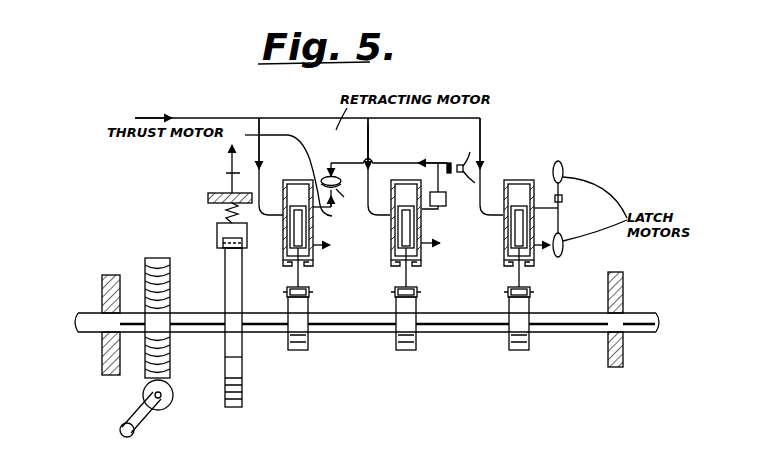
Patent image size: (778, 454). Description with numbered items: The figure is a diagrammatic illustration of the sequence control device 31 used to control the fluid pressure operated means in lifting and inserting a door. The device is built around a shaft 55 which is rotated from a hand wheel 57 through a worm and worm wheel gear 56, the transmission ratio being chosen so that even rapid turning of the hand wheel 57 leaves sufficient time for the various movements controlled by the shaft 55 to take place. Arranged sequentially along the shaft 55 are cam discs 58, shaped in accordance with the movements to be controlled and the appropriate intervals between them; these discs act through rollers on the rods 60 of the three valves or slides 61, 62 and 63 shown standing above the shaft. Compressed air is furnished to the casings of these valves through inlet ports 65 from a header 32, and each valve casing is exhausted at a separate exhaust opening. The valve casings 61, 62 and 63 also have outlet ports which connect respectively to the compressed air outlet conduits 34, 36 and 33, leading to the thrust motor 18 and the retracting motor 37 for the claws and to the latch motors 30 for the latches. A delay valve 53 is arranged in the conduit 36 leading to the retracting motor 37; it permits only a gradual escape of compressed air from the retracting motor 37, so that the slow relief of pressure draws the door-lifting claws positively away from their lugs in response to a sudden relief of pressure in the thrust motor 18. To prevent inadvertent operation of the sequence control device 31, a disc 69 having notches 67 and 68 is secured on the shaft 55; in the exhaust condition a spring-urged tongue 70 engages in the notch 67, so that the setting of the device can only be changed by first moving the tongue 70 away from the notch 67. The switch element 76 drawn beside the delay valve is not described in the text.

The thrust motor 18 is at (349, 199).
The pressure-exerting devices 30 is at (562, 168).
The sequence control device 31 is at (128, 208).
The header 32 is at (297, 118).
The compressed air outlet conduit 33 is at (546, 210).
The compressed air outlet conduit 34 is at (303, 181).
The compressed air outlet conduit 36 is at (374, 161).
The retracting motor 37 is at (332, 170).
The delay valve 53 is at (449, 199).
The shaft 55 is at (273, 326).
The worm and worm wheel gear 56 is at (168, 386).
The hand wheel 57 is at (138, 416).
The cam discs 58 is at (301, 346).
The rods 60 is at (296, 272).
The valve 61 is at (315, 209).
The valve 62 is at (424, 201).
The valve 63 is at (539, 216).
The ports 65 is at (272, 219).
The notch 67 is at (232, 248).
The notch 68 is at (242, 398).
The disc 69 is at (225, 284).
The spring-urged tongue 70 is at (217, 231).
The switch 76 is at (451, 162).